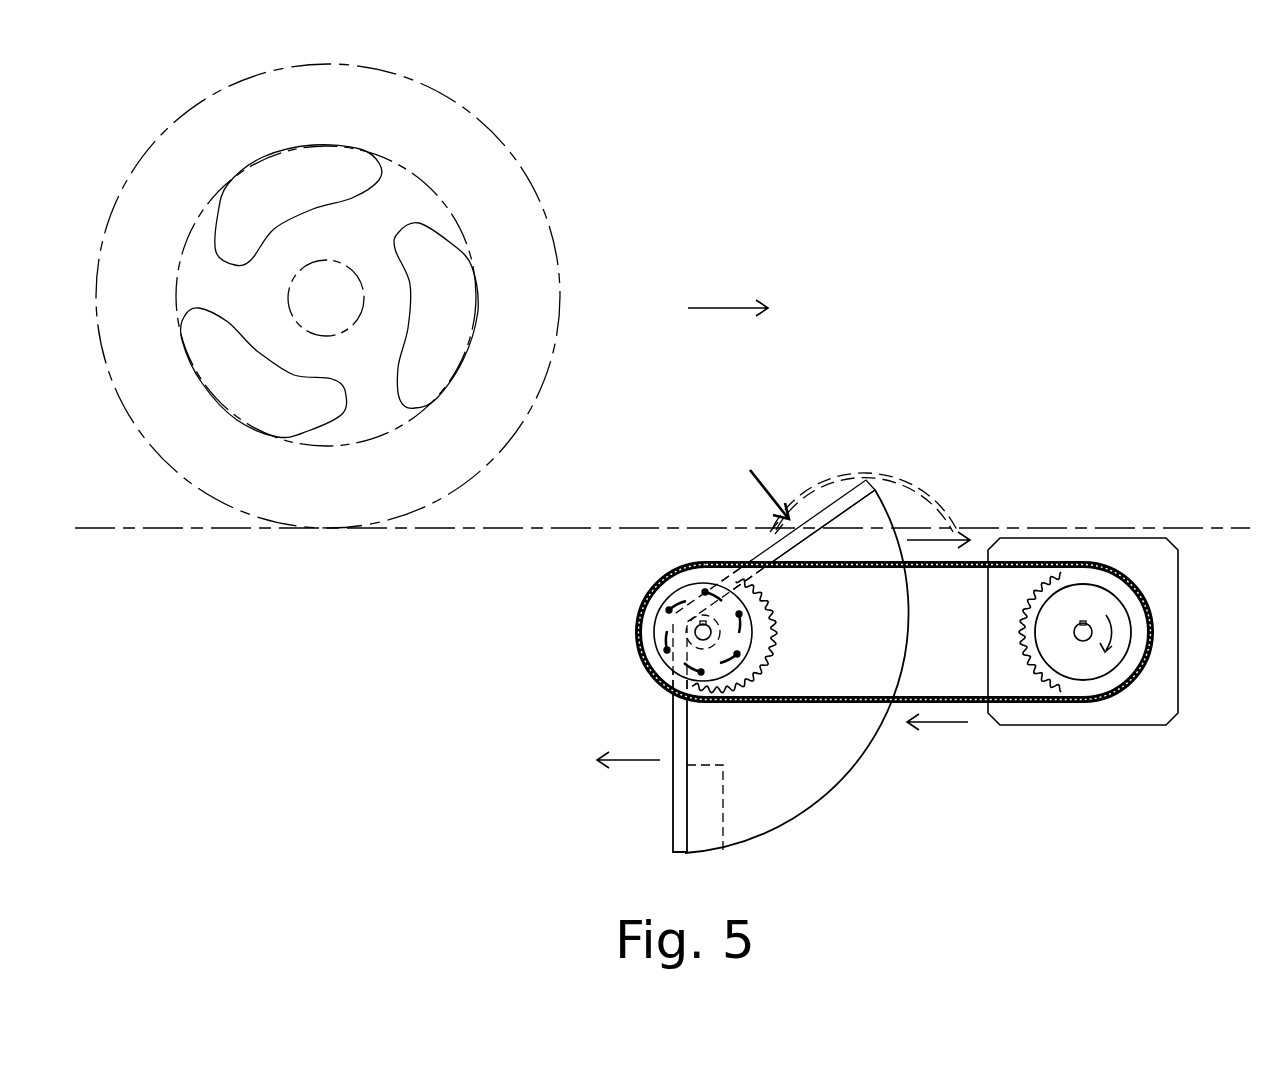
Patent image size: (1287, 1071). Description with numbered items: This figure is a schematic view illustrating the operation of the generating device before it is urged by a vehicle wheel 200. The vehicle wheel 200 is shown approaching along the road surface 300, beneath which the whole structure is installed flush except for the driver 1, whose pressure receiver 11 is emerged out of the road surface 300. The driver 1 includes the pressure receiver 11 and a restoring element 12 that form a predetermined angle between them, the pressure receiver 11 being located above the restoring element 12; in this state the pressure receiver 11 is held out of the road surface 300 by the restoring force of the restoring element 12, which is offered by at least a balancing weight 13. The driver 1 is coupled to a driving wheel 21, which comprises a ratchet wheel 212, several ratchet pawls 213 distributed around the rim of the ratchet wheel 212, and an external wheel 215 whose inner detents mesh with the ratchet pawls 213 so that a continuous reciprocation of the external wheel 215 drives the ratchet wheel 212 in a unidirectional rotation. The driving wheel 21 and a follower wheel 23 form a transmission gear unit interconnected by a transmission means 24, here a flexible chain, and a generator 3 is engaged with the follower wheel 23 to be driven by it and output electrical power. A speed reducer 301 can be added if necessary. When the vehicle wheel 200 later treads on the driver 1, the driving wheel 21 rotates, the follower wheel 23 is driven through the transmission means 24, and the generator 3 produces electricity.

The vehicle wheel 200 is at (538, 196).
The road surface 300 is at (196, 530).
The speed reducer 301 is at (908, 482).
The driver 1 is at (805, 495).
The pressure receiver 11 is at (840, 507).
The restoring element 12 is at (680, 835).
The balancing weight 13 is at (700, 808).
The driving wheel 21 is at (758, 677).
The ratchet wheel 212 is at (692, 590).
The ratchet pawls 213 is at (650, 673).
The external wheel 215 is at (647, 633).
The follower wheel 23 is at (1055, 673).
The transmission means 24 is at (892, 703).
The generator 3 is at (1160, 677).